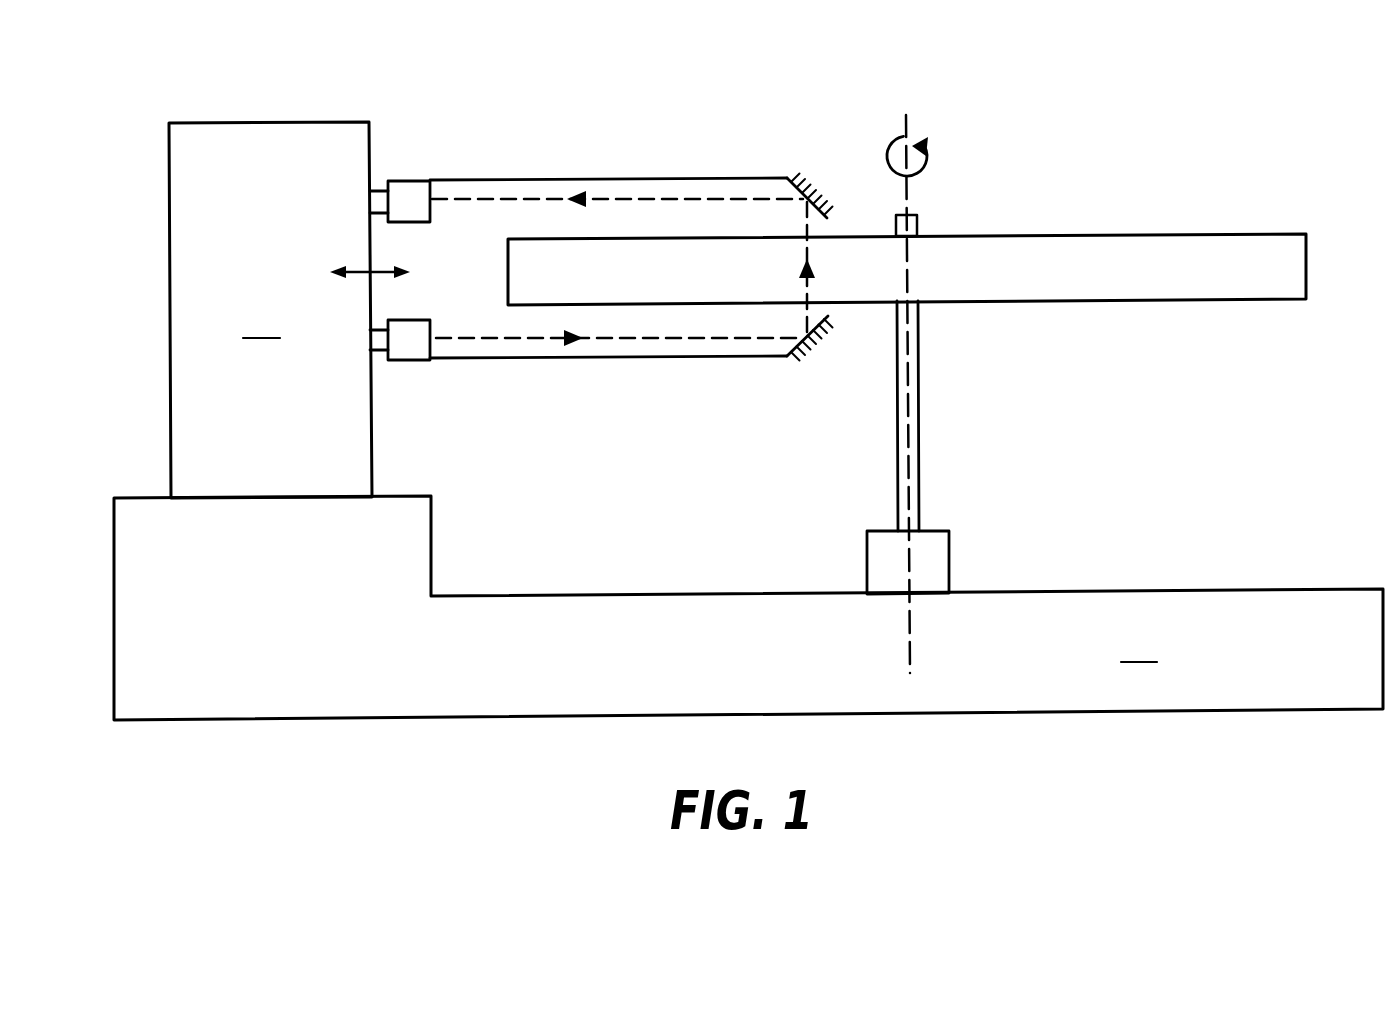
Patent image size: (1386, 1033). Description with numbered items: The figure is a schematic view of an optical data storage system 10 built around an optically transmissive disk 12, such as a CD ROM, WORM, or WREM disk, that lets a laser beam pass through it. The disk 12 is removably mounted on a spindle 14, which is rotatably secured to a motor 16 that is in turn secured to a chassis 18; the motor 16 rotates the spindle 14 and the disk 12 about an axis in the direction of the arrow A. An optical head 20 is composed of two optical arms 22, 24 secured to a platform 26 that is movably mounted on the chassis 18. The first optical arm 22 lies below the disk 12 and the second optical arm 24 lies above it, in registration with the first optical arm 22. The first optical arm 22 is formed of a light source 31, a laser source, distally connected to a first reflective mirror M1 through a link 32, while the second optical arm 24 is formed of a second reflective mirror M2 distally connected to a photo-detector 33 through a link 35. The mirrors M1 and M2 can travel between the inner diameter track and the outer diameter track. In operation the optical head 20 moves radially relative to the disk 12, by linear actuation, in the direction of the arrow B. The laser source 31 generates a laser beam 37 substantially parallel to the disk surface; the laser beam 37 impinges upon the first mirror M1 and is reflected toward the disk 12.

The optical data storage system 10 is at (748, 360).
The disk 12 is at (1124, 245).
The spindle 14 is at (920, 485).
The motor 16 is at (932, 568).
The chassis 18 is at (748, 608).
The optical head 20 is at (654, 143).
The first optical arm 22 is at (645, 382).
The second optical arm 24 is at (726, 172).
The platform 26 is at (270, 310).
The light source 31 is at (418, 348).
The link 32 is at (747, 357).
The photo-detector 33 is at (407, 192).
The link 35 is at (473, 179).
The laser beam 37 is at (558, 336).
The first reflective mirror M1 is at (815, 348).
The second reflective mirror M2 is at (805, 177).
The arrow A is at (924, 394).
The arrow B is at (354, 273).